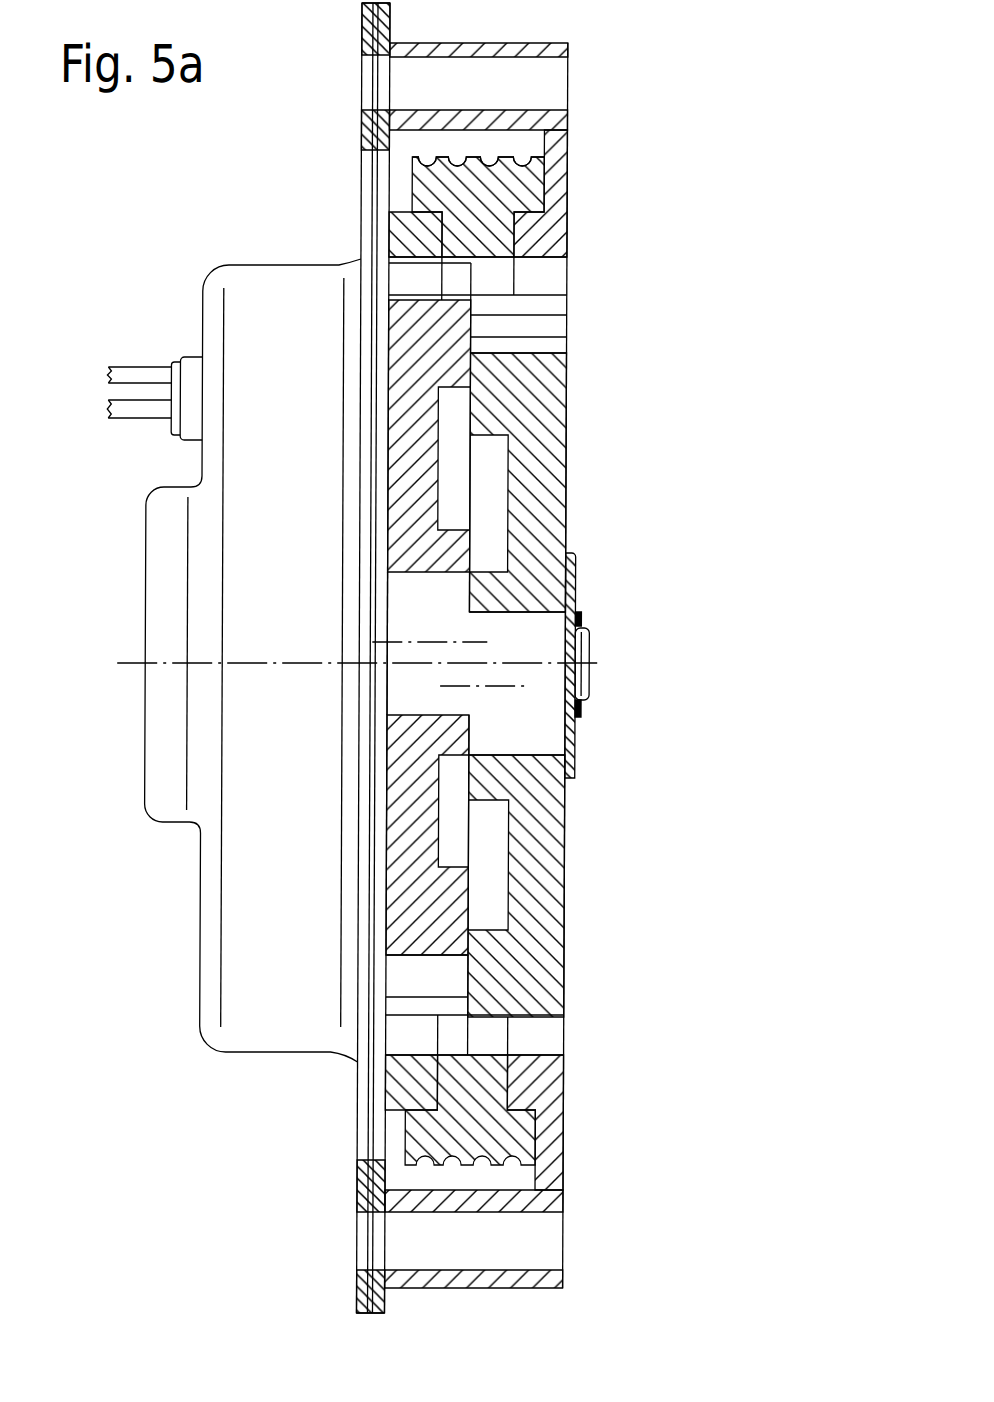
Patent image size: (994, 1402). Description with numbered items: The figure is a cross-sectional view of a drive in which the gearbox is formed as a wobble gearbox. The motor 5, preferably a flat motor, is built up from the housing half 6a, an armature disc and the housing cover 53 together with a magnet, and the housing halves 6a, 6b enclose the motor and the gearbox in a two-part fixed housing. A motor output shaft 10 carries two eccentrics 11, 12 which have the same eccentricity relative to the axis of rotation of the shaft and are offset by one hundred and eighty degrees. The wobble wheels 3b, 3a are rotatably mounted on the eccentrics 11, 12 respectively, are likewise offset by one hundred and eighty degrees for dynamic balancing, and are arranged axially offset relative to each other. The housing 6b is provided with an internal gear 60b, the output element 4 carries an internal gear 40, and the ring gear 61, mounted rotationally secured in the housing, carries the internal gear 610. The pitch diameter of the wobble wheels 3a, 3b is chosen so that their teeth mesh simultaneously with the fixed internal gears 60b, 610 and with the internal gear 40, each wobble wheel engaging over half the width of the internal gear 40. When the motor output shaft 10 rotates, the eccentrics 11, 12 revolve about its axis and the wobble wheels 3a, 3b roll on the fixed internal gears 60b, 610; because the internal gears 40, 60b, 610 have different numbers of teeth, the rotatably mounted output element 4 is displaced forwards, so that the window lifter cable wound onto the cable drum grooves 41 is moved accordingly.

The wobble wheel 3a is at (443, 340).
The wobble wheel 3b is at (548, 403).
The output element 4 is at (530, 180).
The motor 5 is at (263, 473).
The housing half 6a is at (250, 290).
The housing half 6b is at (537, 230).
The motor output shaft 10 is at (547, 668).
The eccentric 11 is at (520, 688).
The eccentric 12 is at (440, 640).
The internal gear 40 is at (497, 282).
The cable drum grooves 41 is at (490, 163).
The housing cover 53 is at (378, 1300).
The internal gear 60b is at (547, 1038).
The ring gear 61 is at (403, 230).
The internal gear 610 is at (397, 1045).